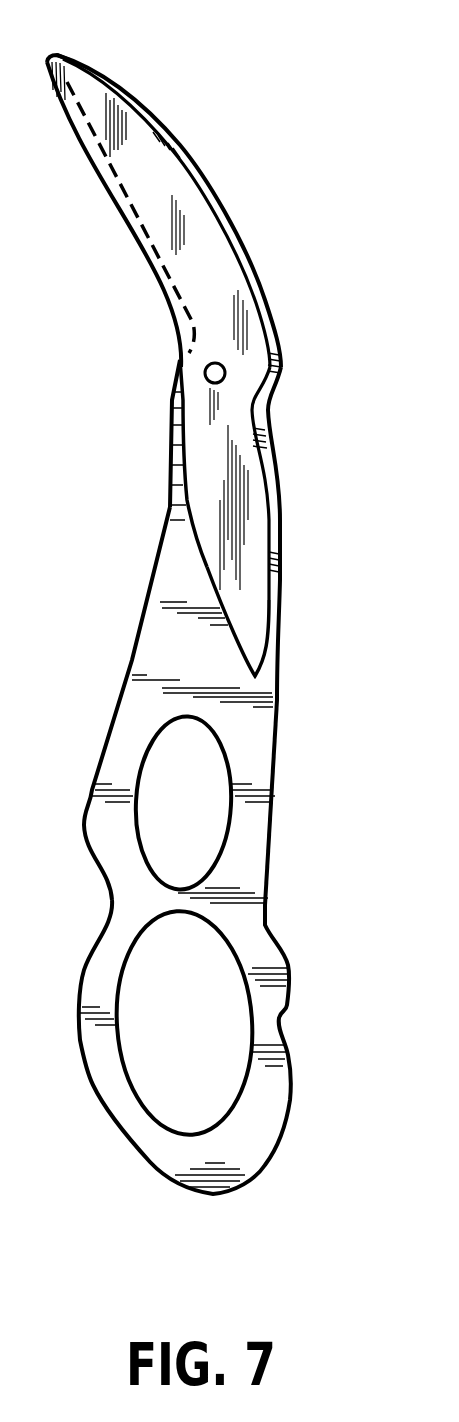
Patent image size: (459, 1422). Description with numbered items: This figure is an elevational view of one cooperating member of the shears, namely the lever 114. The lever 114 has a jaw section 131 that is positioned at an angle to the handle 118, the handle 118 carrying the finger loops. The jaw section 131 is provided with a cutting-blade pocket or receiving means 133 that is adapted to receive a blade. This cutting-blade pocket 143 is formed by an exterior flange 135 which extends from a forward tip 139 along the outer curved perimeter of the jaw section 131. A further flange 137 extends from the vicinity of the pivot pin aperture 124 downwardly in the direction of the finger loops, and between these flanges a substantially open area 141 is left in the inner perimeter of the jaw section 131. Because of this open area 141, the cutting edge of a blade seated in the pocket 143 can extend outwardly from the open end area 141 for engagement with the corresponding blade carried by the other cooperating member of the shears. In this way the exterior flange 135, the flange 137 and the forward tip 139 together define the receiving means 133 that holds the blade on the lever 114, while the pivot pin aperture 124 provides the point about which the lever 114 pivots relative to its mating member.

The lever 114 is at (120, 700).
The handle 118 is at (120, 903).
The pivot pin aperture 124 is at (205, 373).
The jaw section 131 is at (243, 272).
The cutting-blade pocket or receiving means 133 is at (267, 517).
The exterior flange 135 is at (261, 320).
The flange 137 is at (167, 572).
The forward tip 139 is at (78, 54).
The open area 141 is at (145, 208).
The cutting-blade pocket 143 is at (253, 626).